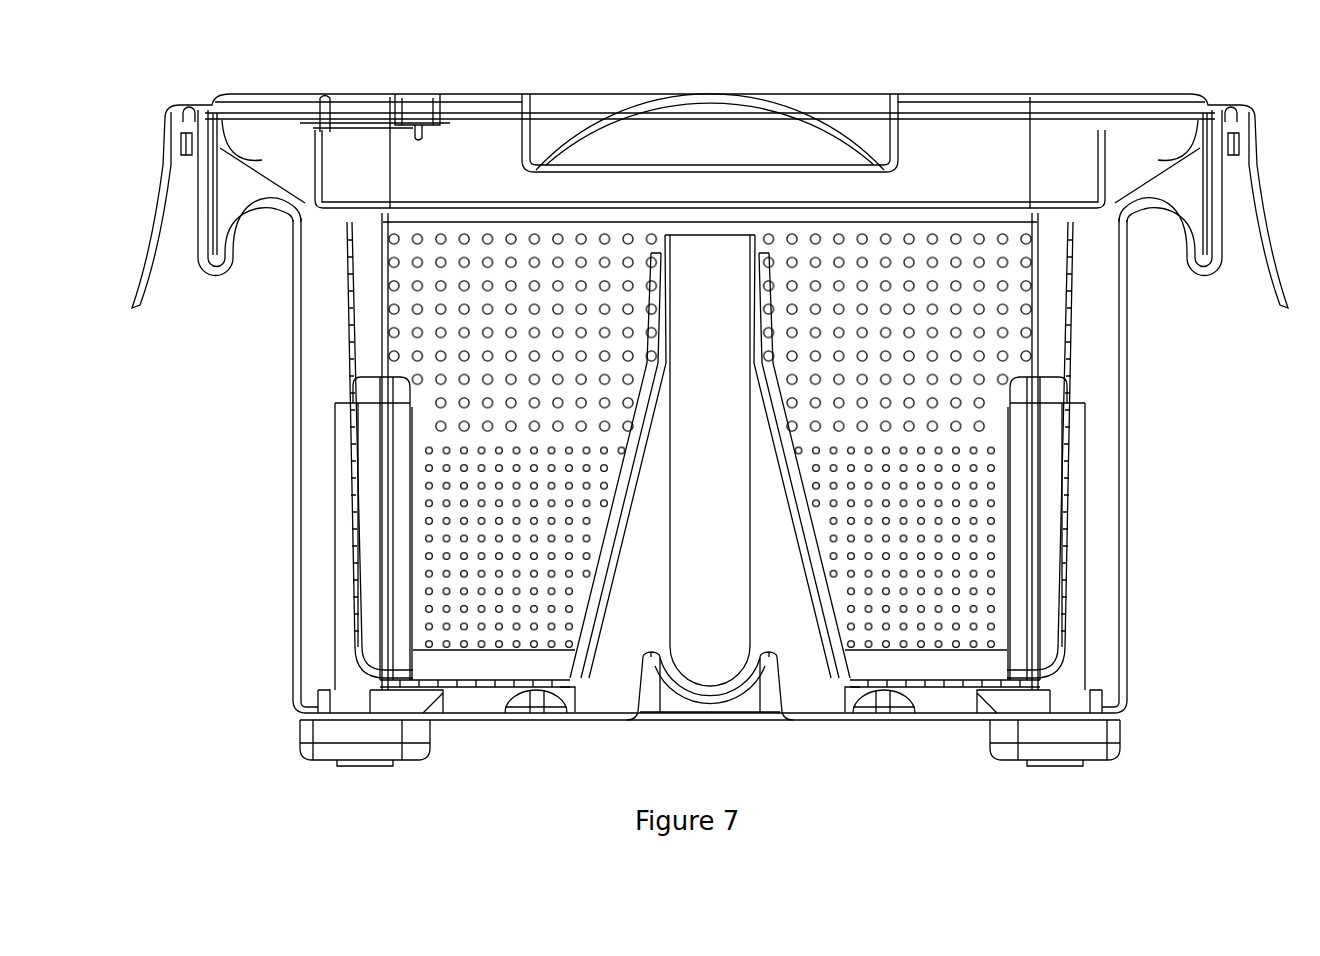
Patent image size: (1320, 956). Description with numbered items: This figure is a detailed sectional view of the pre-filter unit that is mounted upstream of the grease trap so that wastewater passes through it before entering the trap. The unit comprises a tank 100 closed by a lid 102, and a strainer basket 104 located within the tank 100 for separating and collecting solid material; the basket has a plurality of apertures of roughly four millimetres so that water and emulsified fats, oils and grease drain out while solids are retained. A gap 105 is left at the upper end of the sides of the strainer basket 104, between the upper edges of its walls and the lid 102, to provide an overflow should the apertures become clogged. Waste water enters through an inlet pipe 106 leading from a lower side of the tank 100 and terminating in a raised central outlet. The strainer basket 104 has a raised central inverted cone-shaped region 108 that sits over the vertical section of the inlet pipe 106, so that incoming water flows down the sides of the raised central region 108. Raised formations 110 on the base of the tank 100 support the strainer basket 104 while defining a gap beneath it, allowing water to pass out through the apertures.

The tank 100 is at (1122, 565).
The lid 102 is at (930, 98).
The strainer basket 104 is at (1068, 332).
The gap 105 is at (1105, 152).
The inlet pipe 106 is at (672, 583).
The raised central inverted cone-shaped region 108 is at (813, 560).
The raised formations 110 is at (530, 693).